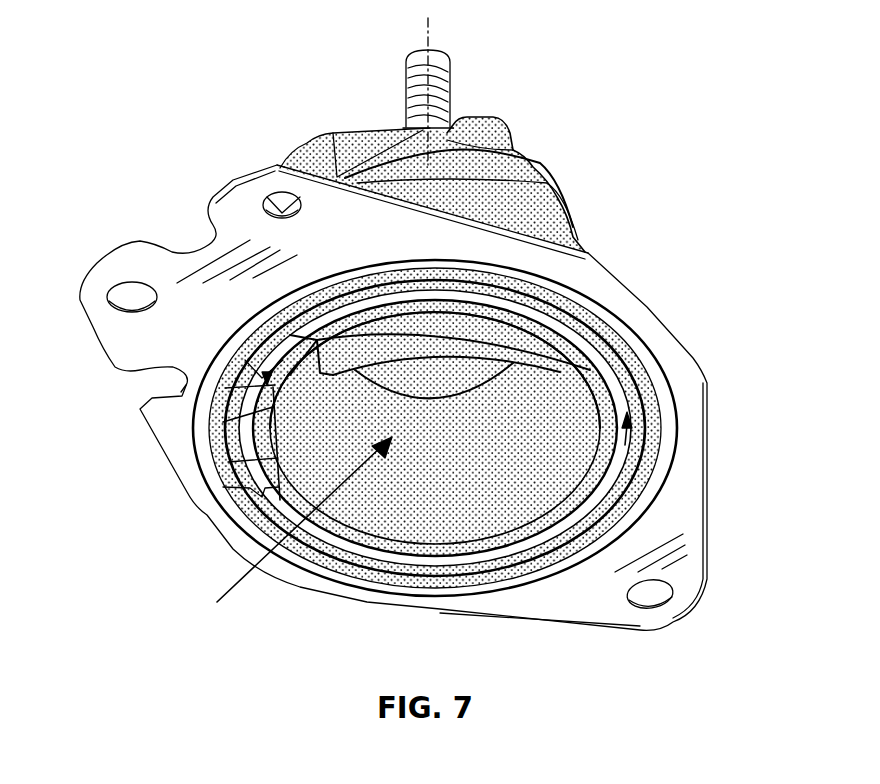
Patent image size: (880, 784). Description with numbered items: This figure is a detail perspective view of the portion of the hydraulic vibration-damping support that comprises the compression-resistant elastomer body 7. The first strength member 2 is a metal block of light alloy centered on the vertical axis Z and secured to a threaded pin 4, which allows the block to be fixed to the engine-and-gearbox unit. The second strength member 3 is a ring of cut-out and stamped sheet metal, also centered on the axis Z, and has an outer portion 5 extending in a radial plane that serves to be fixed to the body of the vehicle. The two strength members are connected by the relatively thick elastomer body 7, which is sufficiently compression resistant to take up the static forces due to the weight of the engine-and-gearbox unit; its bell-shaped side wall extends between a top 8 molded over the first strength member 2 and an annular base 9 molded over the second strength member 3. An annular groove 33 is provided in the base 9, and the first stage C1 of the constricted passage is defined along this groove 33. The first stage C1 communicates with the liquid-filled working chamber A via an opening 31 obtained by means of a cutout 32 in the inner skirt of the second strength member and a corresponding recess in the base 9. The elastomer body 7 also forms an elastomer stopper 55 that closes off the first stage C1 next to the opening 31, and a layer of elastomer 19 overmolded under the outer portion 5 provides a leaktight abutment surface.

The vertical axis Z is at (430, 36).
The threaded pin 4 is at (450, 90).
The first strength member 2 is at (490, 127).
The top 8 is at (490, 182).
The elastomer body 7 is at (573, 247).
The annular base 9 is at (540, 372).
The annular groove 33 is at (647, 360).
The second strength member 3 is at (707, 387).
The first stage C1 is at (637, 442).
The outer portion 5 is at (700, 574).
The opening 31 is at (250, 392).
The cutout 32 is at (262, 418).
The elastomer stopper 55 is at (240, 464).
The working chamber A is at (296, 535).
The layer of elastomer 19 is at (347, 579).